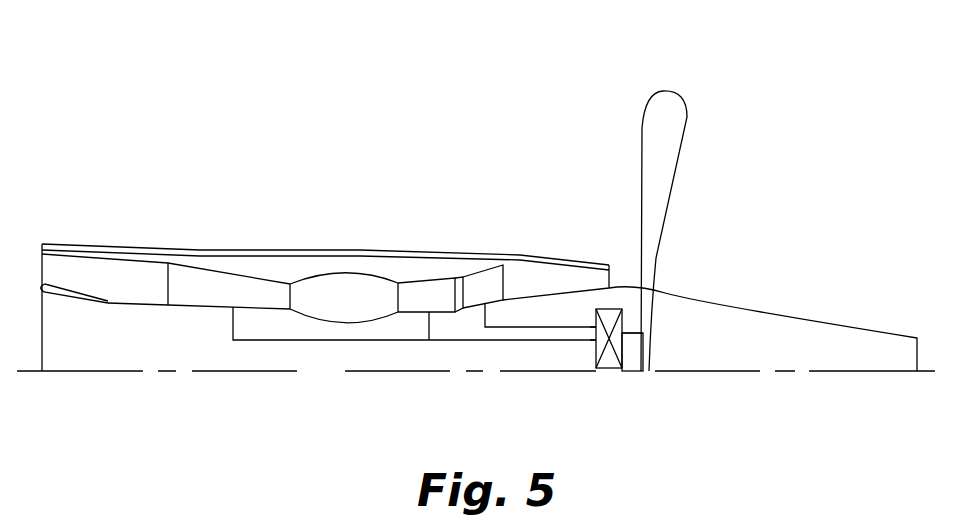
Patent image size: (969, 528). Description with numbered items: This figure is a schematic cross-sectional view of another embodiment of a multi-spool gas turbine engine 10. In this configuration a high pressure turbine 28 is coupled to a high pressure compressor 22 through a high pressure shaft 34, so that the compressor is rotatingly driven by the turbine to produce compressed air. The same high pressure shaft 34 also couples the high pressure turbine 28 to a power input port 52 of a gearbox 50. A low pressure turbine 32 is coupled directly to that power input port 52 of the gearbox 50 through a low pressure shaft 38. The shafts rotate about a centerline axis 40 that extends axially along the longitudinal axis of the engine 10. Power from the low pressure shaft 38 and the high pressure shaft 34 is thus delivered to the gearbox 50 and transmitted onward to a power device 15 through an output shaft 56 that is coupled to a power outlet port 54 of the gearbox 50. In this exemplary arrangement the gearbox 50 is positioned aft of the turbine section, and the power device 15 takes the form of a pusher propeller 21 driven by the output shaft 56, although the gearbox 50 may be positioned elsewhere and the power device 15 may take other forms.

The gas turbine engine 10 is at (270, 168).
The power device 15 is at (679, 203).
The pusher propeller 21 is at (670, 118).
The high pressure compressor 22 is at (213, 290).
The high pressure turbine 28 is at (423, 290).
The low pressure turbine 32 is at (478, 280).
The high pressure shaft 34 is at (312, 342).
The low pressure shaft 38 is at (513, 342).
The centerline axis 40 is at (838, 371).
The gearbox 50 is at (609, 357).
The power input port 52 is at (593, 350).
The power outlet port 54 is at (622, 371).
The output shaft 56 is at (628, 348).